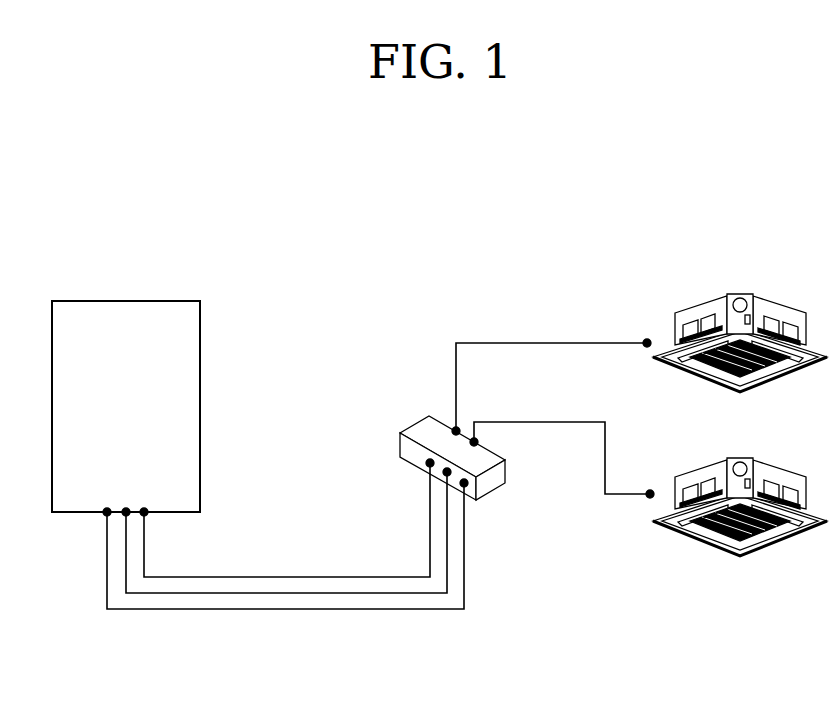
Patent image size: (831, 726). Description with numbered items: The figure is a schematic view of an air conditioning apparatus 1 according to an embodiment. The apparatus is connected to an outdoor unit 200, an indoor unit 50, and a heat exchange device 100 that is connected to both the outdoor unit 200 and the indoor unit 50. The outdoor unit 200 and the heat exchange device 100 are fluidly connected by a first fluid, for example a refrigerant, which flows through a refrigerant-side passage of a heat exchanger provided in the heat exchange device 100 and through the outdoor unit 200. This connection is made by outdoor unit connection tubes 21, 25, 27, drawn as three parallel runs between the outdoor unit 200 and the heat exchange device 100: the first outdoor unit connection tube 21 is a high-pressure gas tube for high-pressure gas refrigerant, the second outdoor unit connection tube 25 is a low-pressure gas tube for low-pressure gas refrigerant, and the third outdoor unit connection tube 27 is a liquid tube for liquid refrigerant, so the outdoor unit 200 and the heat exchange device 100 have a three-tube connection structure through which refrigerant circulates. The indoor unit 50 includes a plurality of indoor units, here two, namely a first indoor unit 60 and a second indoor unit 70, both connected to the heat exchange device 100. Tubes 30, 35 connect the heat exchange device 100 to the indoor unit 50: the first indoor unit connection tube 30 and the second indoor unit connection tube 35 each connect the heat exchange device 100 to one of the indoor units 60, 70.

The air conditioning apparatus 1 is at (418, 210).
The outdoor unit 200 is at (143, 289).
The heat exchange device 100 is at (402, 408).
The first outdoor unit connection tube 21 is at (252, 577).
The second outdoor unit connection tube 25 is at (280, 593).
The third outdoor unit connection tube 27 is at (342, 610).
The first indoor unit connection tube 30 is at (558, 342).
The second indoor unit connection tube 35 is at (555, 422).
The indoor unit 50 is at (740, 308).
The first indoor unit 60 is at (780, 375).
The second indoor unit 70 is at (783, 537).